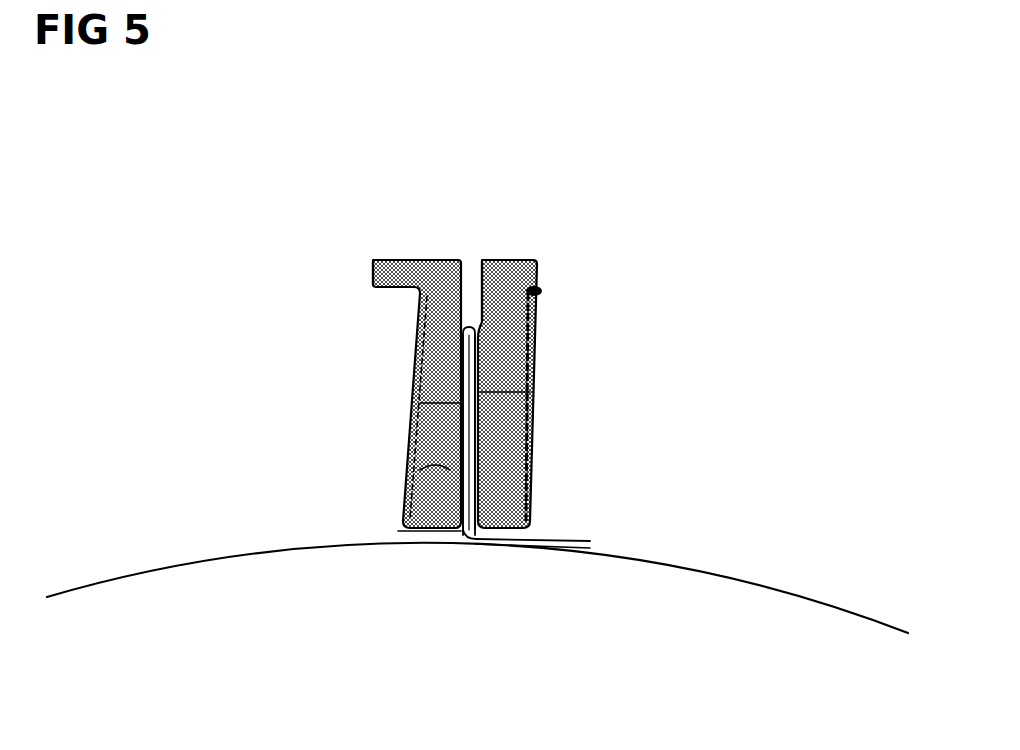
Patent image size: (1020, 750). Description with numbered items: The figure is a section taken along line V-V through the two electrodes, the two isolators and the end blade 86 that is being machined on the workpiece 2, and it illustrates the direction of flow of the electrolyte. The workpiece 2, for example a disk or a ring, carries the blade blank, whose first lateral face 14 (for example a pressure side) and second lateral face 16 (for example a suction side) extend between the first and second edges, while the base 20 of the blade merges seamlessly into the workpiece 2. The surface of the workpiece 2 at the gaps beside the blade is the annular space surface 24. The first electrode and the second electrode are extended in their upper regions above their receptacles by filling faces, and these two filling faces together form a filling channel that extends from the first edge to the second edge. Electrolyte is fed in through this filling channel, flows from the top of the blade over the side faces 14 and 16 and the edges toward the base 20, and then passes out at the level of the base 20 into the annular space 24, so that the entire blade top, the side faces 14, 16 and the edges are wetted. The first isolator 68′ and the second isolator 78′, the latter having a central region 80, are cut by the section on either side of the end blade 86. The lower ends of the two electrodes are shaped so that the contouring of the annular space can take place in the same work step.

The workpiece 2 is at (706, 529).
The first lateral face 14 is at (418, 407).
The second lateral face 16 is at (527, 395).
The base 20 is at (466, 542).
The annular space surface 24 is at (529, 548).
The first isolator 68′ is at (421, 354).
The second isolator 78′ is at (533, 345).
The central region 80 is at (471, 246).
The end blade being machined 86 is at (466, 436).